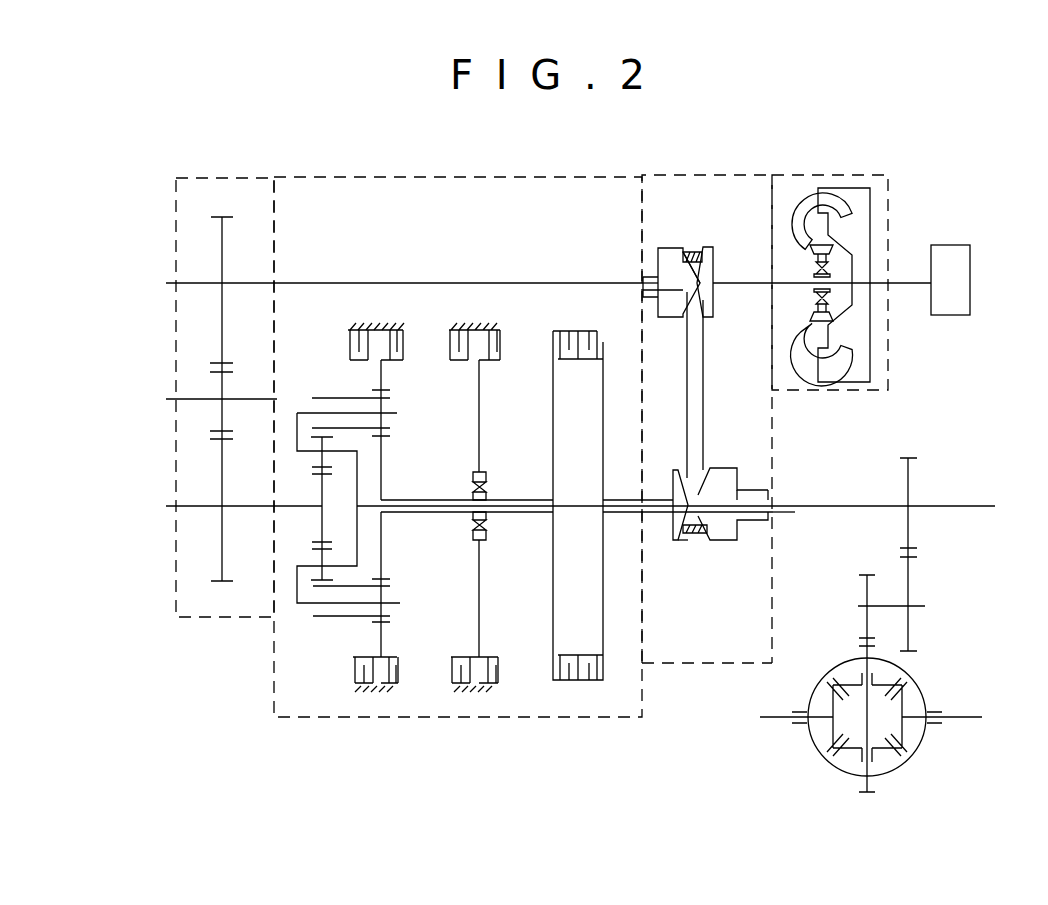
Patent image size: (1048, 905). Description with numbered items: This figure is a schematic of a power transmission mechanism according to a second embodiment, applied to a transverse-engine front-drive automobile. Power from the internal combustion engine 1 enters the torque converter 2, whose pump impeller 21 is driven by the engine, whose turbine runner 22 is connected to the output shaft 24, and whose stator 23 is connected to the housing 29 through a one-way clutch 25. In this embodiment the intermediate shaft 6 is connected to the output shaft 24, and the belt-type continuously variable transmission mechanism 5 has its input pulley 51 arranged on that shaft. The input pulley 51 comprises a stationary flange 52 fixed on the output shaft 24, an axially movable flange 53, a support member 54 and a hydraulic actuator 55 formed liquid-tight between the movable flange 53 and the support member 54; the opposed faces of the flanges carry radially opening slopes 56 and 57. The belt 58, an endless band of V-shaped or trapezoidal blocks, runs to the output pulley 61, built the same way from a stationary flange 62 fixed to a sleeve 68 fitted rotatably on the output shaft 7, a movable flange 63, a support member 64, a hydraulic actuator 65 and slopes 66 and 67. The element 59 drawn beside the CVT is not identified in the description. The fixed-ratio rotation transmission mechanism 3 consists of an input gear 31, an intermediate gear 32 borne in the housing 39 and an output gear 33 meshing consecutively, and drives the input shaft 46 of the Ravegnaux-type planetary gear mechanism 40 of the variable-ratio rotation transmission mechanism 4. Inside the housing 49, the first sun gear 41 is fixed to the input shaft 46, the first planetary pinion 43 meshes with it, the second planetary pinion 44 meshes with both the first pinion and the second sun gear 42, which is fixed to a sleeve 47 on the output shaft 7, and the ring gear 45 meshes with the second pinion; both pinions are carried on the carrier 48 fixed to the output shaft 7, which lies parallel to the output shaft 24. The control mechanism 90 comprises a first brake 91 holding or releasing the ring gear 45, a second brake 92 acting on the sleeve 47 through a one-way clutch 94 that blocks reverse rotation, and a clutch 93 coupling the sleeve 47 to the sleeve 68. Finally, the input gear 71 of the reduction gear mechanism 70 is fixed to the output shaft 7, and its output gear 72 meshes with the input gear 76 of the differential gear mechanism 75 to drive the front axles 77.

The internal combustion engine 1 is at (980, 279).
The torque converter 2 is at (880, 203).
The rotation transmission mechanism of fixed ratio 3 is at (216, 212).
The rotation transmission mechanism of variable ratio 4 is at (545, 200).
The belt-type continuously variable transmission mechanism 5 is at (748, 176).
The intermediate shaft 6 is at (502, 282).
The output shaft 7 is at (958, 503).
The pump impeller 21 is at (805, 212).
The turbine runner 22 is at (857, 348).
The stator 23 is at (835, 248).
The output shaft of the torque converter 24 is at (818, 287).
The one-way clutch 25 is at (820, 300).
The housing of the torque converter 29 is at (845, 183).
The input gear 31 is at (222, 348).
The intermediate gear 32 is at (222, 422).
The output gear 33 is at (222, 546).
The housing of the fixed ratio rotation transmission mechanism 39 is at (176, 220).
The Ravegnaux-type planetary gear mechanism 40 is at (332, 618).
The first sun gear 41 is at (312, 473).
The second sun gear 42 is at (383, 488).
The first planetary pinion 43 is at (312, 548).
The second planetary pinion 44 is at (390, 588).
The ring gear 45 is at (388, 392).
The input shaft of the planetary gear mechanism 46 is at (250, 508).
The sleeve 47 is at (420, 514).
The carrier 48 is at (297, 430).
The housing of the variable ratio rotation transmission mechanism 49 is at (396, 176).
The input pulley 51 is at (664, 245).
The stationary flange 52 is at (715, 275).
The movable flange 53 is at (673, 318).
The support member 54 is at (658, 300).
The hydraulic actuator 55 is at (652, 262).
The slope 56 is at (700, 255).
The slope 57 is at (687, 251).
The belt 58 is at (706, 386).
The transmission case 59 is at (665, 664).
The output pulley 61 is at (721, 544).
The stationary flange 62 is at (672, 482).
The movable flange 63 is at (726, 466).
The support member 64 is at (760, 522).
The hydraulic actuator 65 is at (737, 485).
The slope 66 is at (681, 542).
The slope 67 is at (698, 540).
The sleeve 68 is at (785, 513).
The reduction gear mechanism 70 is at (920, 586).
The input gear 71 is at (915, 548).
The output gear 72 is at (866, 575).
The differential gear mechanism 75 is at (929, 697).
The input gear 76 is at (856, 648).
The front axles 77 is at (770, 720).
The control mechanism 90 is at (395, 312).
The first brake 91 is at (346, 350).
The second brake 92 is at (451, 350).
The clutch 93 is at (551, 350).
The one-way clutch 94 is at (486, 528).